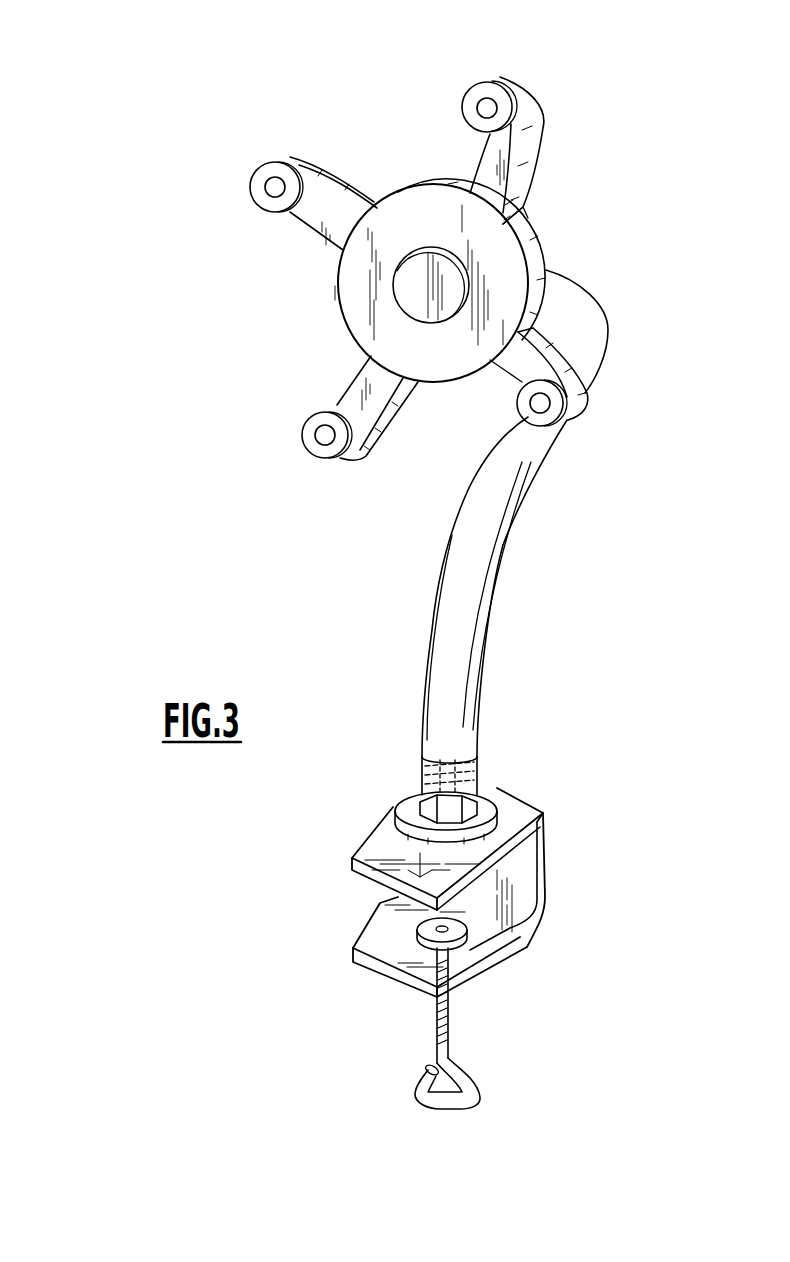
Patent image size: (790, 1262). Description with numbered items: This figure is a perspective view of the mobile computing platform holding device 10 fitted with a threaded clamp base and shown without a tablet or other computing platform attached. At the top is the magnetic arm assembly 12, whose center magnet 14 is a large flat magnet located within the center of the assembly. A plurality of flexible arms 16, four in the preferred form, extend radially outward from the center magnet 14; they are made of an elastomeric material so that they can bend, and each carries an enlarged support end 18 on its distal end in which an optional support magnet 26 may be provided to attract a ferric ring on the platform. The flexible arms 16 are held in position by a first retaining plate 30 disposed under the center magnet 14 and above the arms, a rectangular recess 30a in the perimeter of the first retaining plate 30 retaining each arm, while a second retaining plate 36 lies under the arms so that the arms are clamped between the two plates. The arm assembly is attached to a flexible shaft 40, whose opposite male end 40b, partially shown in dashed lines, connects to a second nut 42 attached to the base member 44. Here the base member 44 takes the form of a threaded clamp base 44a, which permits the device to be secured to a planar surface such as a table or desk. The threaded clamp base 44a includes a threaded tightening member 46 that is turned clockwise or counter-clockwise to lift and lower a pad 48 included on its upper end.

The mobile computing platform holding device 10 is at (127, 91).
The magnetic arm assembly 12 is at (296, 321).
The center magnet 14 is at (406, 281).
The flexible arms 16 is at (335, 203).
The support end 18 is at (278, 168).
The support magnets 26 is at (275, 186).
The first retaining plate 30 is at (503, 307).
The rectangular recess 30a is at (519, 214).
The second retaining plate 36 is at (543, 254).
The flexible shaft 40 is at (467, 595).
The male end 40b is at (478, 768).
The second nut 42 is at (422, 805).
The base member 44 is at (488, 812).
The threaded clamp base 44a is at (522, 883).
The threaded tightening member 46 is at (452, 1022).
The pad 48 is at (457, 928).